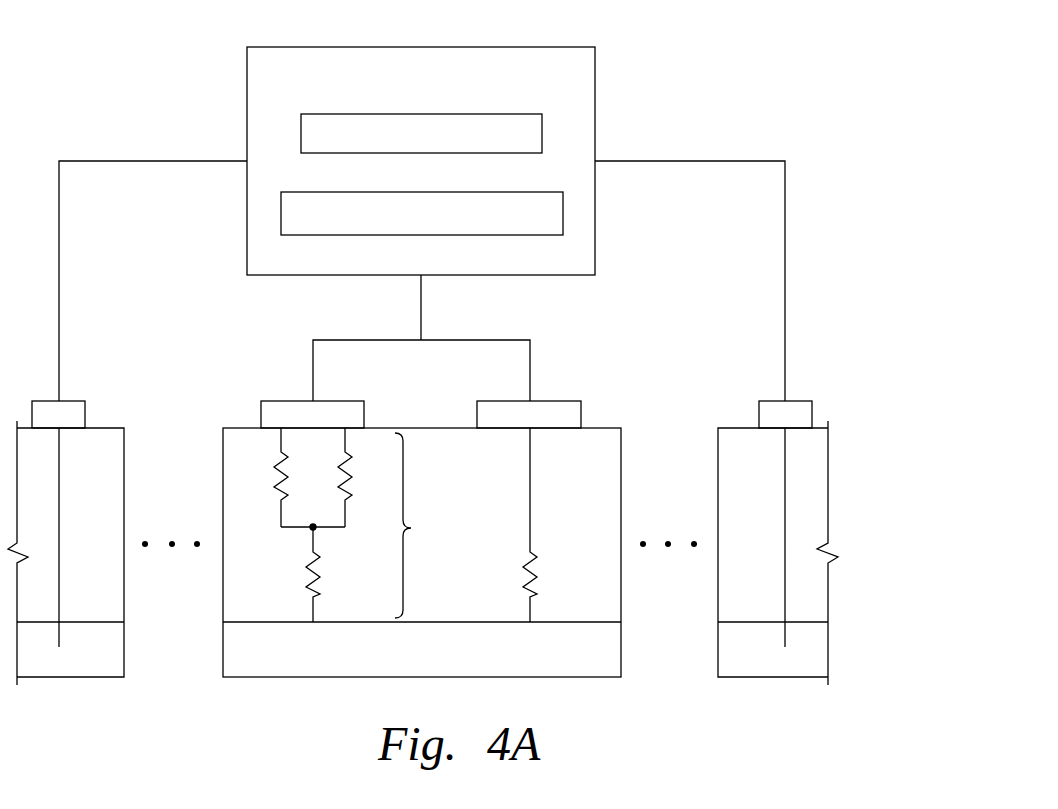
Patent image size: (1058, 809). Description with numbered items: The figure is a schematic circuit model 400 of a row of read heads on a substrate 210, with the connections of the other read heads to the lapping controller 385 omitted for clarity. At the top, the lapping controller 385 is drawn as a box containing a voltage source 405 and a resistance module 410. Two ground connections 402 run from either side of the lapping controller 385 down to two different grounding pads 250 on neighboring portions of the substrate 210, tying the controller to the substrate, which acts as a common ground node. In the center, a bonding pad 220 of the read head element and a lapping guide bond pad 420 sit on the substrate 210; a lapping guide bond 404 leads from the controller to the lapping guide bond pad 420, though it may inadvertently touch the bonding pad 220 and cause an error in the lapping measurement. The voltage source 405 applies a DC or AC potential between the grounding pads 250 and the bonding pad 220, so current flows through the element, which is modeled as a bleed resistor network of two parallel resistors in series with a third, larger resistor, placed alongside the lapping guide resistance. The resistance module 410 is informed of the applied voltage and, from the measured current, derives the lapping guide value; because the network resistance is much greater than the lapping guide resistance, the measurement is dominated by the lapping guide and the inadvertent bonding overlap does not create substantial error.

The circuit model 400 is at (704, 40).
The lapping controller 385 is at (421, 144).
The voltage source 405 is at (462, 114).
The resistance module 410 is at (475, 192).
The ground connections 402 is at (60, 245).
The ELG bond 404 is at (347, 339).
The grounding pads 250 is at (72, 400).
The bonding pad 220 is at (278, 400).
The ELG bond pad 420 is at (562, 400).
The substrate 210 is at (621, 648).